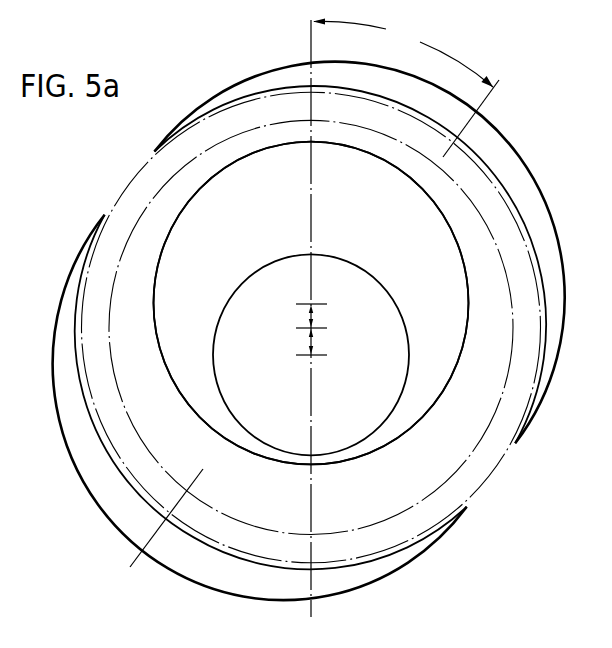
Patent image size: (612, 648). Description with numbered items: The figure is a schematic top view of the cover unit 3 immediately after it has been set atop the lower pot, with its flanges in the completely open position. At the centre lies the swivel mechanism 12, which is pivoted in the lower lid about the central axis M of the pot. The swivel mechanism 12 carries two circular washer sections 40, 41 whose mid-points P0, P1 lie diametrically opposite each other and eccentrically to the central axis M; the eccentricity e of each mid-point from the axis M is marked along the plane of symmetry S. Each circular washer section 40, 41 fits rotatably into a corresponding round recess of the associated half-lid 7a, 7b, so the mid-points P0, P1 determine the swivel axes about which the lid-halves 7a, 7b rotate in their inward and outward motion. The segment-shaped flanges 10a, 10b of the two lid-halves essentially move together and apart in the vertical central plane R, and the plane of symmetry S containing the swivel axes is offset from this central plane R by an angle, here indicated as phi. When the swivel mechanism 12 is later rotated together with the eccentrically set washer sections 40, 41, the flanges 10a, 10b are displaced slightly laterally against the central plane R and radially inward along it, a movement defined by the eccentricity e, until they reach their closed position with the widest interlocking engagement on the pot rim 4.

The cover unit 3 is at (315, 331).
The pot rim 4 is at (476, 481).
The half-lid 7a is at (500, 128).
The half-lid 7b is at (115, 527).
The segment-shaped flange 10a is at (524, 185).
The segment-shaped flange 10b is at (107, 496).
The swivel mechanism 12 is at (470, 349).
The circular washer section 40 is at (449, 289).
The circular washer section 41 is at (386, 398).
The plane of symmetry S is at (303, 322).
The vertical central plane R is at (315, 327).
The angle phi is at (403, 53).
The central axis of the pot M is at (317, 325).
The mid-point of circular washer section P0 is at (315, 301).
The mid-point of circular washer section P1 is at (307, 359).
The eccentricity e is at (303, 329).